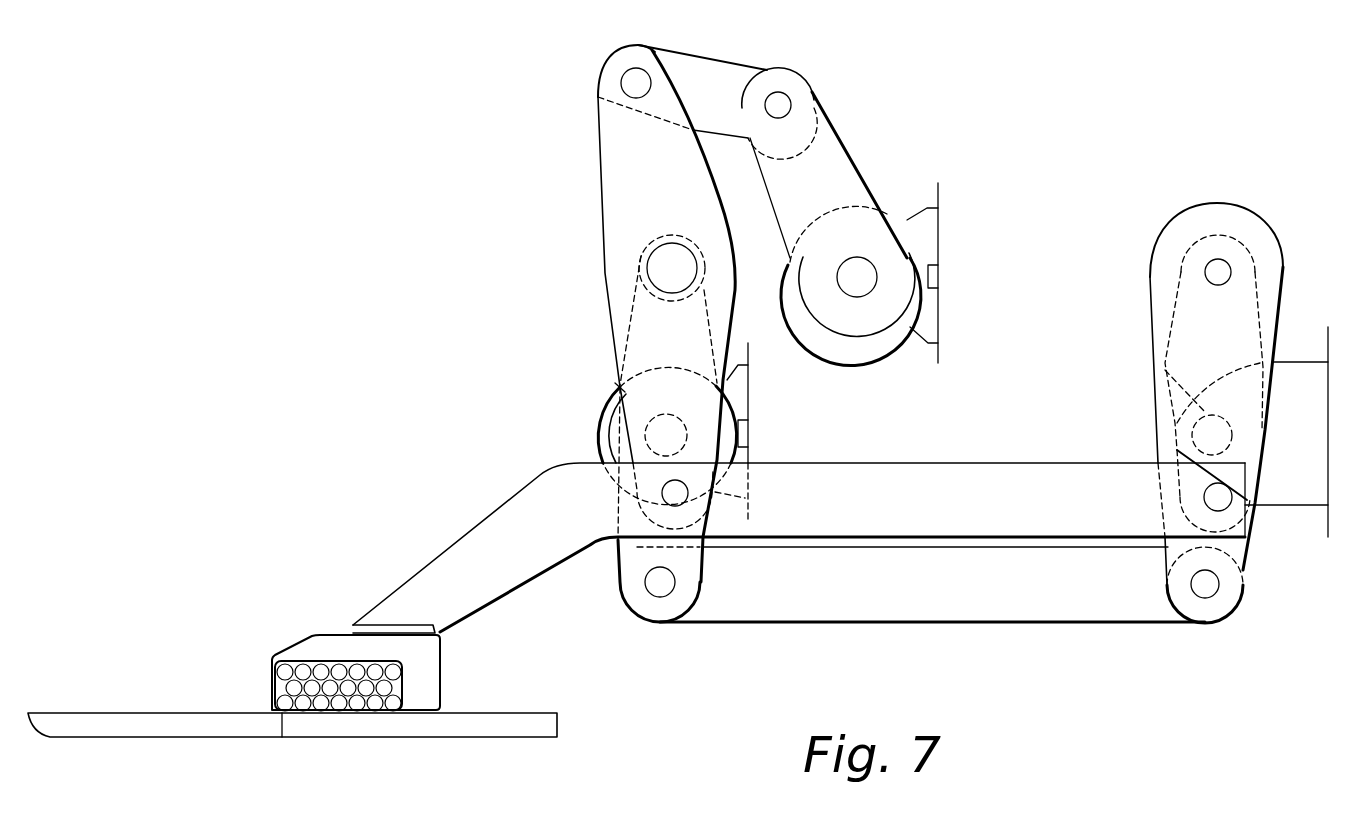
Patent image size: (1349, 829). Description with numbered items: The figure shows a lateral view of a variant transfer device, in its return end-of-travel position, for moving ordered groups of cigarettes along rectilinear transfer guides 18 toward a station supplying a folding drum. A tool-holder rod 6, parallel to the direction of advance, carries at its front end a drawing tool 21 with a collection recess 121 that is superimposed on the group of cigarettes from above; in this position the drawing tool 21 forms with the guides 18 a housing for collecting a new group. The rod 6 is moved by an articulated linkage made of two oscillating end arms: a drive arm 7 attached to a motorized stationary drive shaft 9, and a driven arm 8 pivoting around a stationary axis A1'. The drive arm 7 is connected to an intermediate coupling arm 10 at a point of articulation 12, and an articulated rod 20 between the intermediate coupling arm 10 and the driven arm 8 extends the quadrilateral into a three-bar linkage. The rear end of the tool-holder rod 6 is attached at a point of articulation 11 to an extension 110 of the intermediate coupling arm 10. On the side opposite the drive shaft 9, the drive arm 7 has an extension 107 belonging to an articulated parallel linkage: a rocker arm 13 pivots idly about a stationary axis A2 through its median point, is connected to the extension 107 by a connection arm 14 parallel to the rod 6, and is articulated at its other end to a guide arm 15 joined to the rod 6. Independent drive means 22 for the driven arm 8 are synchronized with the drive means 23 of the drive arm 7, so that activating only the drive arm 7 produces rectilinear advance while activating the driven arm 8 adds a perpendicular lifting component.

The tool-holder rod 6 is at (898, 465).
The drive arm 7 is at (708, 297).
The driven arm 8 is at (833, 153).
The drive shaft 9 is at (672, 432).
The intermediate coupling arm 10 is at (610, 163).
The point of articulation 11 is at (677, 495).
The point of articulation 12 is at (670, 267).
The rocker arm 13 is at (1160, 417).
The connection arm 14 is at (893, 605).
The guide arm 15 is at (1282, 290).
The transfer guides 18 is at (440, 740).
The articulated rod 20 is at (725, 67).
The drawing tool 21 is at (332, 634).
The motorized drive means 22 is at (893, 214).
The drive means 23 is at (598, 425).
The extension 107 is at (622, 542).
The extension 110 is at (620, 387).
The collection recess 121 is at (393, 688).
The stationary axis A1' is at (918, 259).
The stationary axis A2 is at (1211, 418).